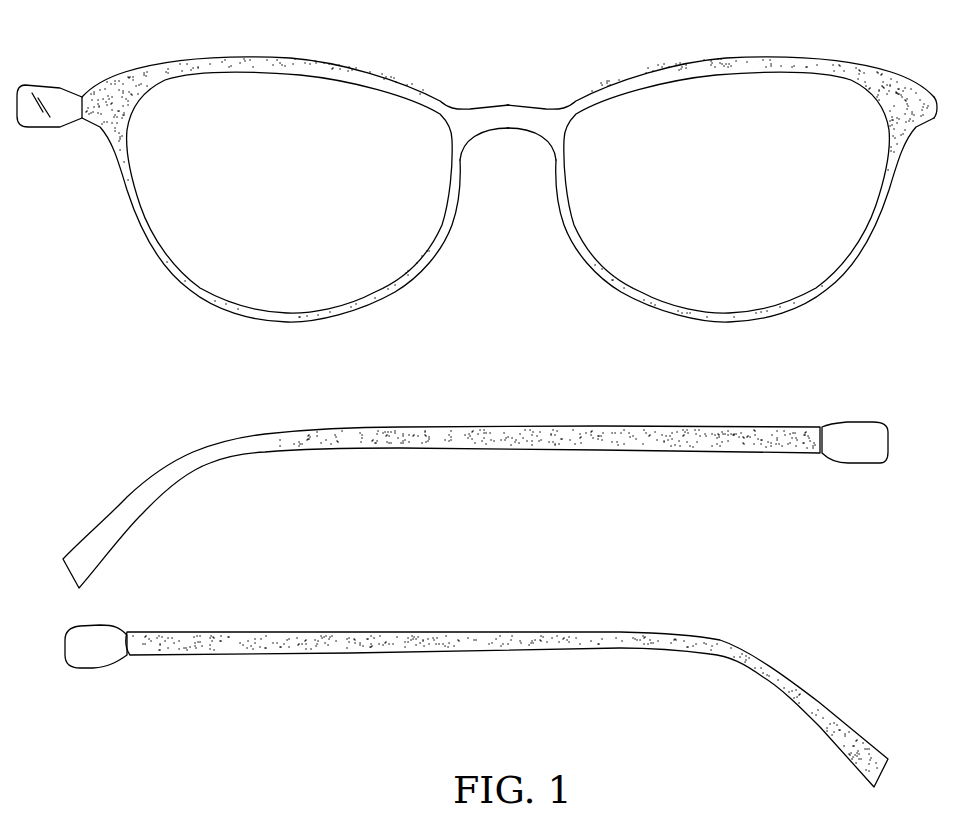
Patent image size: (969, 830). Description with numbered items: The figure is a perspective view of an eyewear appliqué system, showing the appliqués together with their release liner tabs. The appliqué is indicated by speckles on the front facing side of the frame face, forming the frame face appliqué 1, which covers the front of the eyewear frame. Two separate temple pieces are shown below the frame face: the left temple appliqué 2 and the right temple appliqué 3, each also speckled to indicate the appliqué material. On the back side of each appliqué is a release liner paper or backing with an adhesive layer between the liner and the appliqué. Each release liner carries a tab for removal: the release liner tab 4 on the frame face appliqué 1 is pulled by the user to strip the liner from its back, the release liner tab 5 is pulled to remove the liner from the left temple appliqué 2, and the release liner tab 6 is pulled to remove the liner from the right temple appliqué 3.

The frame face appliqué 1 is at (867, 237).
The left temple appliqué 2 is at (720, 642).
The right temple appliqué 3 is at (207, 447).
The release liner tab 4 is at (42, 80).
The release liner tab 5 is at (93, 670).
The release liner tab 6 is at (860, 468).